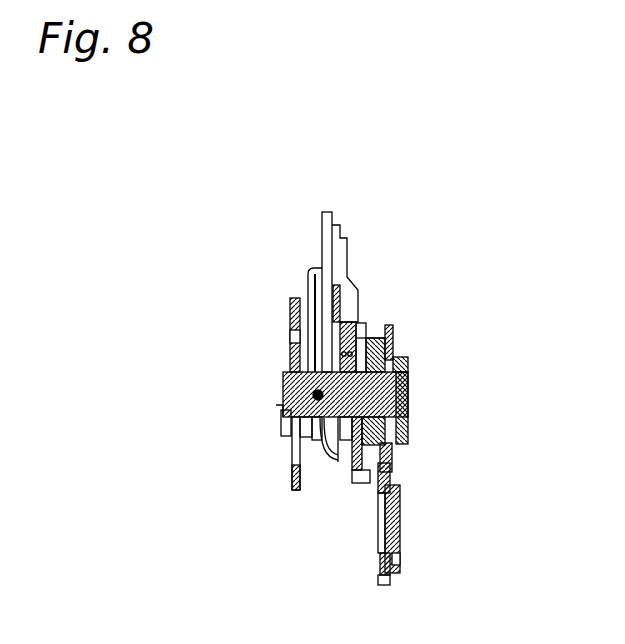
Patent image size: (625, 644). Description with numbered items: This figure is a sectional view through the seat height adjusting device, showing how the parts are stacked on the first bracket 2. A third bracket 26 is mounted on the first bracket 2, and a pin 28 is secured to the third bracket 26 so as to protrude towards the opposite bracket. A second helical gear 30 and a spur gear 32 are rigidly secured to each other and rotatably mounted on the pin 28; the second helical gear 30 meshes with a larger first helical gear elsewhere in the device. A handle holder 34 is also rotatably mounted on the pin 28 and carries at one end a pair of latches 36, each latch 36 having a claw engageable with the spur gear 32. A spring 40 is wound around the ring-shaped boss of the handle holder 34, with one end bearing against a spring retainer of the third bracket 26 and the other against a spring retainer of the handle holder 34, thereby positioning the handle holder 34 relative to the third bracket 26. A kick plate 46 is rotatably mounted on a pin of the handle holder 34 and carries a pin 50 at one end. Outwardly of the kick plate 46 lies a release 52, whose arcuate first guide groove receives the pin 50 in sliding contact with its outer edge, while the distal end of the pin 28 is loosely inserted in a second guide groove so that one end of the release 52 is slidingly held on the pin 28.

The first bracket 2 is at (408, 435).
The third bracket 26 is at (398, 332).
The pin 28 is at (408, 405).
The second helical gear 30 is at (409, 362).
The spur gear 32 is at (342, 465).
The handle holder 34 is at (347, 300).
The latch 36 is at (322, 225).
The spring 40 is at (320, 460).
The kick plate 46 is at (292, 440).
The pin 50 is at (280, 435).
The release 52 is at (290, 312).